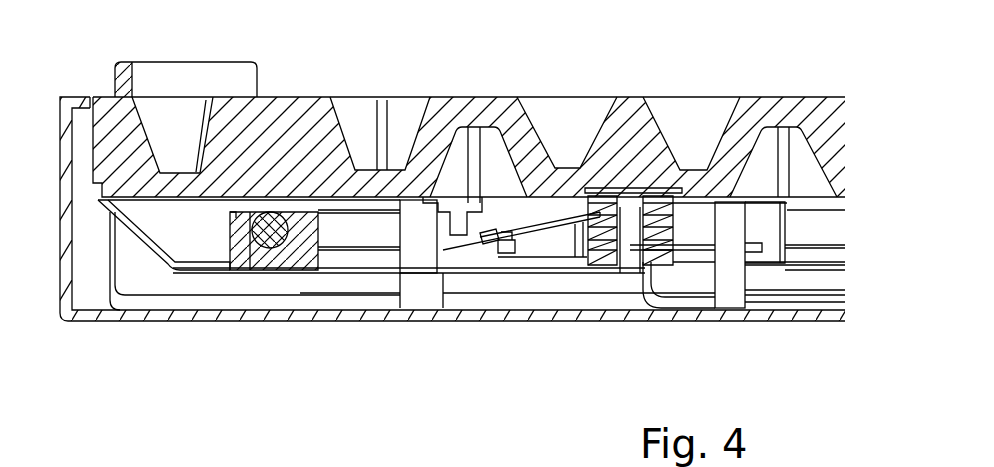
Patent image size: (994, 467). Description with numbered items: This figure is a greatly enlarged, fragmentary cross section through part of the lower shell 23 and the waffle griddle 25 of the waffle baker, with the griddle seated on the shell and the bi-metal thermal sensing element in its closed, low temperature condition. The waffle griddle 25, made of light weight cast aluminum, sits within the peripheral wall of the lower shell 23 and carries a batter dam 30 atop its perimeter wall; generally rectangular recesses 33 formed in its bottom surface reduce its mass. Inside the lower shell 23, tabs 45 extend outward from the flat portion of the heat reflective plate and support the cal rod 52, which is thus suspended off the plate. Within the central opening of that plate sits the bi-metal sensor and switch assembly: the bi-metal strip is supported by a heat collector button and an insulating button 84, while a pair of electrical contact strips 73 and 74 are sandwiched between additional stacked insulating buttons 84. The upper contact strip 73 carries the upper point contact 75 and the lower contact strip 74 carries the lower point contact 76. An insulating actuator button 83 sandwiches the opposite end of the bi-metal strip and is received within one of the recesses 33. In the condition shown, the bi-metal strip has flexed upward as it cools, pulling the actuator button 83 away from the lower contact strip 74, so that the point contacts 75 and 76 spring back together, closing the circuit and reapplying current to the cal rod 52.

The lower shell 23 is at (143, 323).
The waffle griddle 25 is at (631, 93).
The batter dam 30 is at (243, 78).
The recesses 33 is at (505, 125).
The tabs 45 is at (243, 310).
The cal rod 52 is at (265, 242).
The upper contact strip 73 is at (524, 228).
The lower contact strip 74 is at (570, 232).
The upper point contact 75 is at (481, 215).
The lower point contact 76 is at (480, 255).
The insulating actuator button 83 is at (447, 213).
The insulating button 84 is at (668, 213).